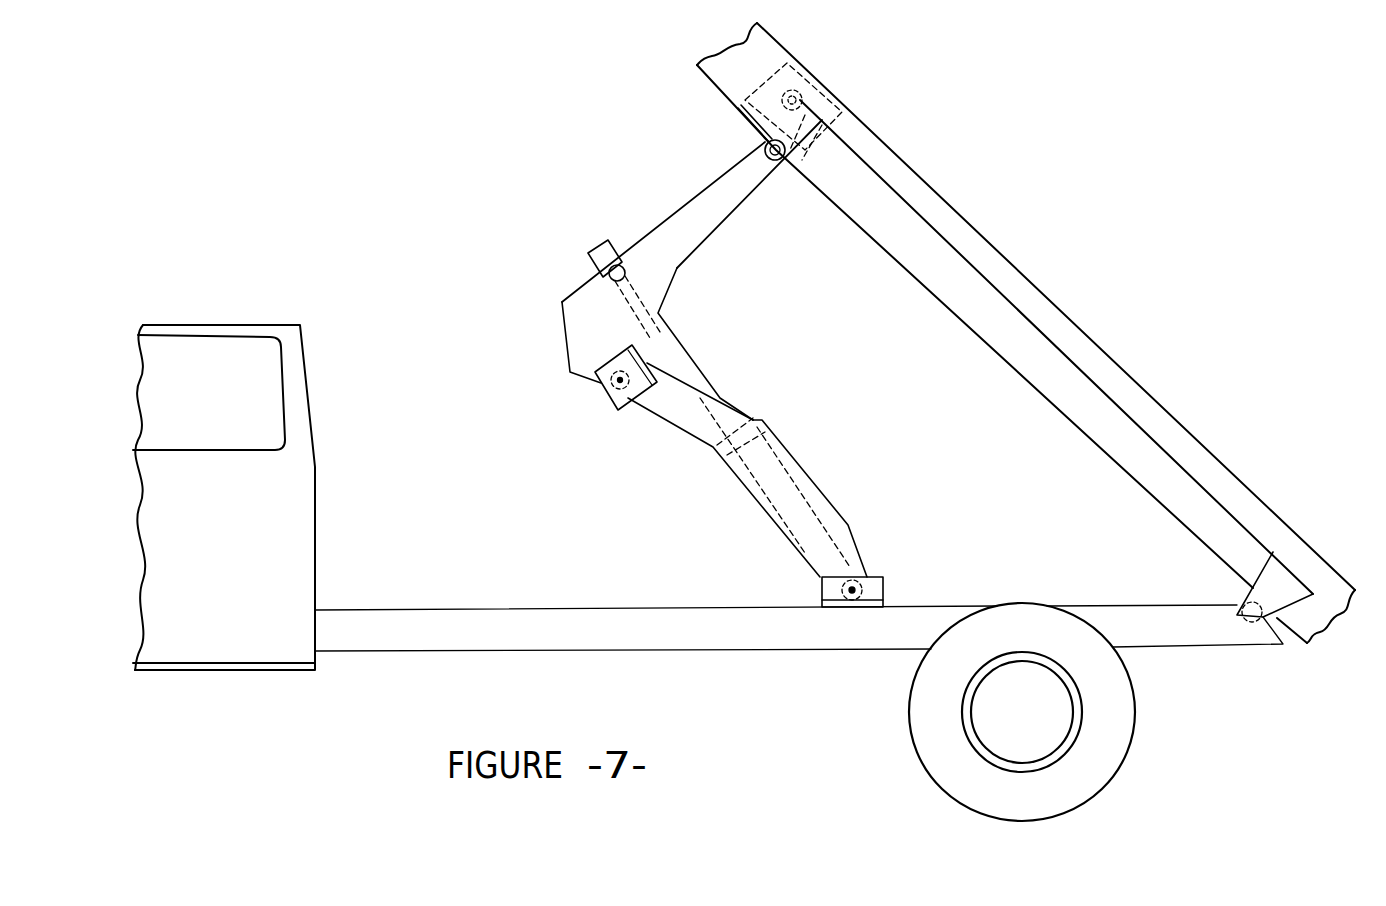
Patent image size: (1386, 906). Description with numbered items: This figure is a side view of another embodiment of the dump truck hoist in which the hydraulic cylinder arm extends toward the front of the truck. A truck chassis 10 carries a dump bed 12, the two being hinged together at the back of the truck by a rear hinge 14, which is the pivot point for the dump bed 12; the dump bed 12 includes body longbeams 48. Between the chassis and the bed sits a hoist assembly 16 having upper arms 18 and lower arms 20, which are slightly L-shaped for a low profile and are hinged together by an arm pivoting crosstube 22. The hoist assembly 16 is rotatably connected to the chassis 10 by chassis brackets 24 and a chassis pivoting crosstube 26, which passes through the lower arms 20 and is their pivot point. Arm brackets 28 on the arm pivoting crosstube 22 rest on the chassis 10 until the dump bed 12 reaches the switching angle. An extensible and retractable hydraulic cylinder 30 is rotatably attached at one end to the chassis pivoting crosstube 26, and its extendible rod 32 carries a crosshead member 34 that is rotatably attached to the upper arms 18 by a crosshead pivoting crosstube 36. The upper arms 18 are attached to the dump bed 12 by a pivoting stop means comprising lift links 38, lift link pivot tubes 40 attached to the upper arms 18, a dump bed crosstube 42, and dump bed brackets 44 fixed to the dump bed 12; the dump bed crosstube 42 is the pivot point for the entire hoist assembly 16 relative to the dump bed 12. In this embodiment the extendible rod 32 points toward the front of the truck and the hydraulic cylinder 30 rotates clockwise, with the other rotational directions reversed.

The truck chassis 10 is at (537, 622).
The dump bed 12 is at (1082, 282).
The rear hinge 14 is at (1252, 622).
The hoist assembly 16 is at (527, 287).
The upper arms 18 is at (726, 205).
The lower arms 20 is at (782, 449).
The arm pivoting crosstube 22 is at (605, 382).
The chassis brackets 24 is at (866, 580).
The chassis pivoting crosstube 26 is at (857, 591).
The arm brackets 28 is at (633, 412).
The hydraulic cylinder 30 is at (785, 512).
The extendible rod 32 is at (684, 362).
The crosshead member 34 is at (600, 240).
The crosshead pivoting crosstube 36 is at (632, 276).
The lift links 38 is at (786, 130).
The lift link pivot tubes 40 is at (765, 152).
The dump bed crosstube 42 is at (795, 92).
The dump bed brackets 44 is at (738, 107).
The body longbeams 48 is at (1165, 492).